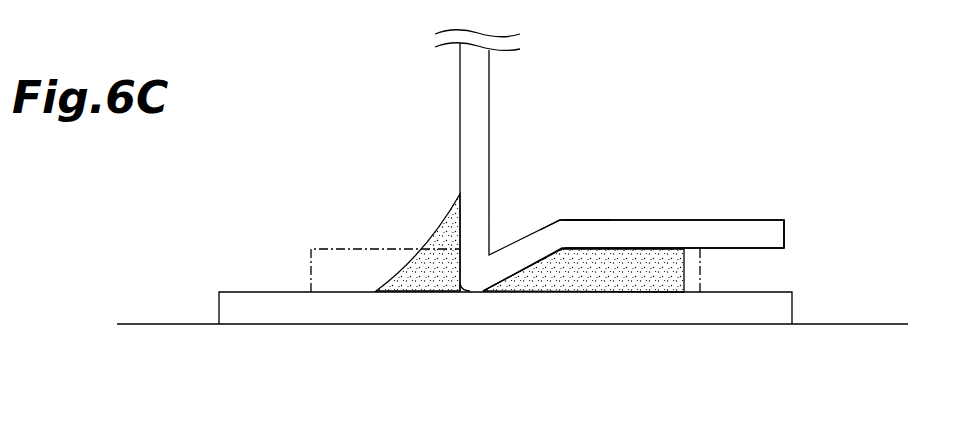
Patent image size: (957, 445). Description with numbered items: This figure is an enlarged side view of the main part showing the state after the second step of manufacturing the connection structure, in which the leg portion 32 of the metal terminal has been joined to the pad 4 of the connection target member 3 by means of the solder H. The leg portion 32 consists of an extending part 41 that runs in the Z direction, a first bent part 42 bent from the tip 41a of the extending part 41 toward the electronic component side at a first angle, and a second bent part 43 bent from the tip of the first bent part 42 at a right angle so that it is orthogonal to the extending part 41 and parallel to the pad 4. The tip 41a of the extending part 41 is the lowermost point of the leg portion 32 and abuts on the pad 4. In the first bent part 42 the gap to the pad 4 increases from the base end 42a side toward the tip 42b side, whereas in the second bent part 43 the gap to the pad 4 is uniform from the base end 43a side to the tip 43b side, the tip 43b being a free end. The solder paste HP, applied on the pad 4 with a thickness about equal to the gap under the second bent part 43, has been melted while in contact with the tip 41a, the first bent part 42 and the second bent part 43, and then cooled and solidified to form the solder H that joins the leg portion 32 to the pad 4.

The connection target member 3 is at (154, 322).
The pad 4 is at (238, 296).
The leg portion 32 is at (430, 100).
The extending part 41 is at (462, 135).
The tip of the extending part 41a is at (470, 290).
The first bent part 42 is at (532, 238).
The base end of the first bent part 42a is at (503, 281).
The tip of the first bent part 42b is at (558, 219).
The second bent part 43 is at (684, 225).
The base end of the second bent part 43a is at (590, 224).
The tip of the second bent part 43b is at (770, 230).
The solder H is at (432, 226).
The solder paste HP is at (797, 262).